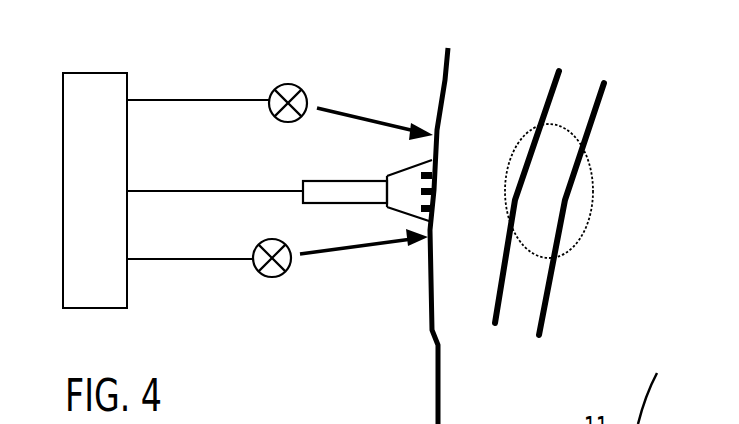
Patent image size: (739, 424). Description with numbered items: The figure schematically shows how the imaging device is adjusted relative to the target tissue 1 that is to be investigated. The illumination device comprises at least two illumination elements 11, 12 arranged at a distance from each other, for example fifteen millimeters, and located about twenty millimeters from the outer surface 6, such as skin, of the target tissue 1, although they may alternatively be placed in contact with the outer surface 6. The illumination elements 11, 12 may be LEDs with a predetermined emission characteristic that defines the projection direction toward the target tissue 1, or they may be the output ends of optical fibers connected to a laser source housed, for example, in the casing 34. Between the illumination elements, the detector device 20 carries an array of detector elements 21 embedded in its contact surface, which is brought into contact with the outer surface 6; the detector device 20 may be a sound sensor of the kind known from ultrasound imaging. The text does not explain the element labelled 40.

The target tissue 1 is at (530, 137).
The outer surface 6 is at (430, 153).
The illumination element 11 is at (285, 93).
The illumination element 12 is at (272, 268).
The detector device 20 is at (346, 194).
The detector elements 21 is at (435, 208).
The casing 34 is at (90, 86).
The element 40 is at (524, 417).